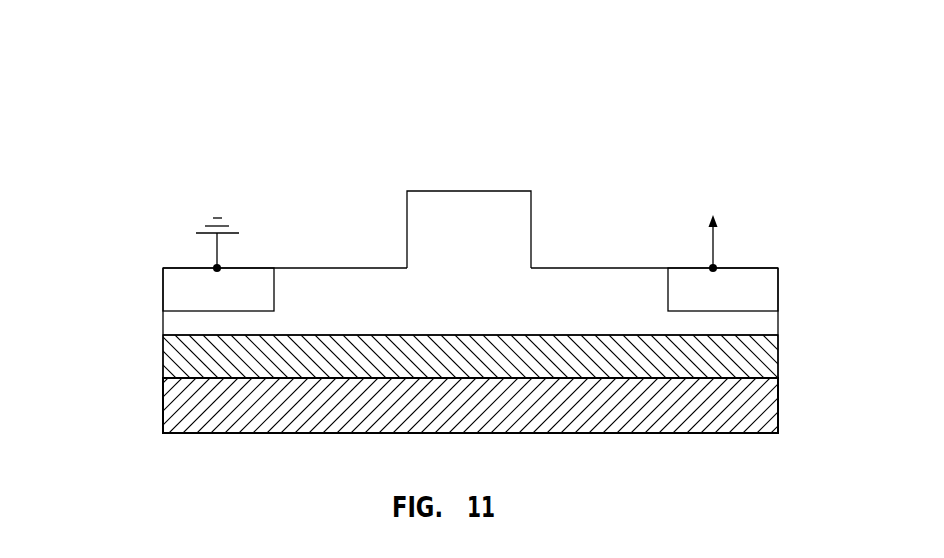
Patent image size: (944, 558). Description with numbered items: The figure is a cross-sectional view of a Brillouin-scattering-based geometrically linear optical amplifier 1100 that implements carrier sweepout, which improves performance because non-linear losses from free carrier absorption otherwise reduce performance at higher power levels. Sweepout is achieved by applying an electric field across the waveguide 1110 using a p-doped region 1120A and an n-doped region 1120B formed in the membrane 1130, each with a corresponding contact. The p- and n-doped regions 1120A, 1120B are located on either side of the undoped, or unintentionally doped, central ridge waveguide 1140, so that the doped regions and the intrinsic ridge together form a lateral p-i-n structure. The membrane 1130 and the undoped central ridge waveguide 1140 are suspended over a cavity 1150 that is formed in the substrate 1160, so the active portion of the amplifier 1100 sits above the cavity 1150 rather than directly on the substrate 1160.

The Brillouin-scattering-based geometrically linear optical amplifier 1100 is at (495, 27).
The waveguide 1110 is at (300, 246).
The p-doped region 1120A is at (148, 269).
The n-doped region 1120B is at (794, 265).
The membrane 1130 is at (163, 305).
The undoped central ridge waveguide 1140 is at (490, 163).
The cavity 1150 is at (163, 359).
The substrate 1160 is at (163, 410).